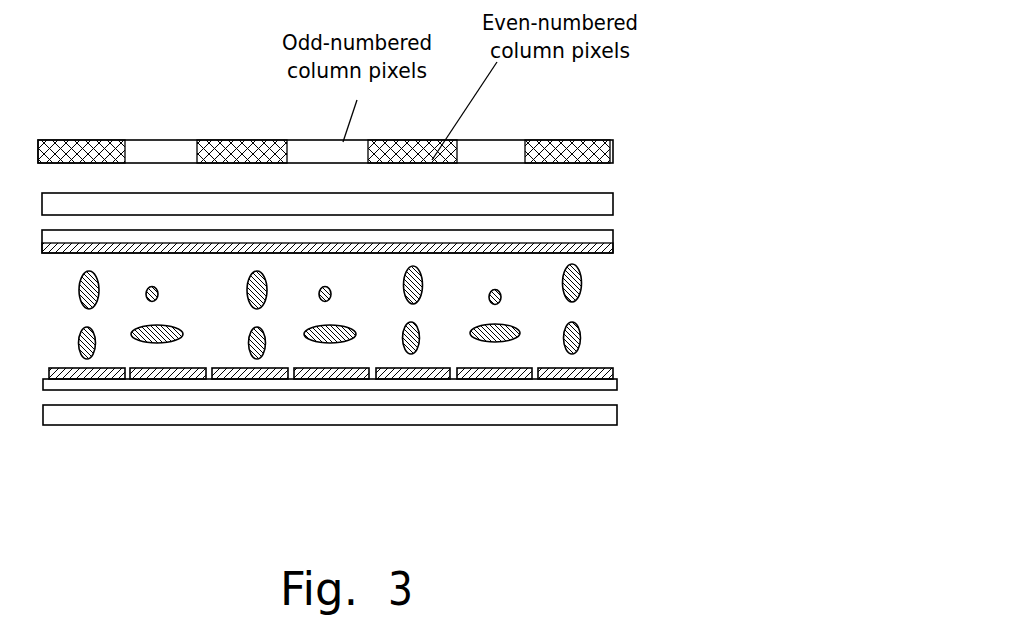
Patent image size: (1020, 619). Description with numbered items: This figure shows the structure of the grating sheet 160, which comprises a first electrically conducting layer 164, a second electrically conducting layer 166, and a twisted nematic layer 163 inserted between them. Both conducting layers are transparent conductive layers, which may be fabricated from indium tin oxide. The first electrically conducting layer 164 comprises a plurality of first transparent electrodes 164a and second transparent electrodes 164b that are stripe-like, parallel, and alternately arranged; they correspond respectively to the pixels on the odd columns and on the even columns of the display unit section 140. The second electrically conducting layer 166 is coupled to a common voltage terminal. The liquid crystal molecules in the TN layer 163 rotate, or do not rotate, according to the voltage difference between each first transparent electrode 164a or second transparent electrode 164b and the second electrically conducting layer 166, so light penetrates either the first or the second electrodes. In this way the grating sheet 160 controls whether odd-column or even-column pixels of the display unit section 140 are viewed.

The display unit section 140 is at (613, 150).
The grating sheet 160 is at (397, 373).
The second electrically conducting layer 166 is at (613, 243).
The twisted nematic (TN) layer 163 is at (578, 327).
The first electrically conducting layer 164 is at (363, 431).
The first transparent electrodes 164a is at (330, 373).
The second transparent electrodes 164b is at (403, 373).